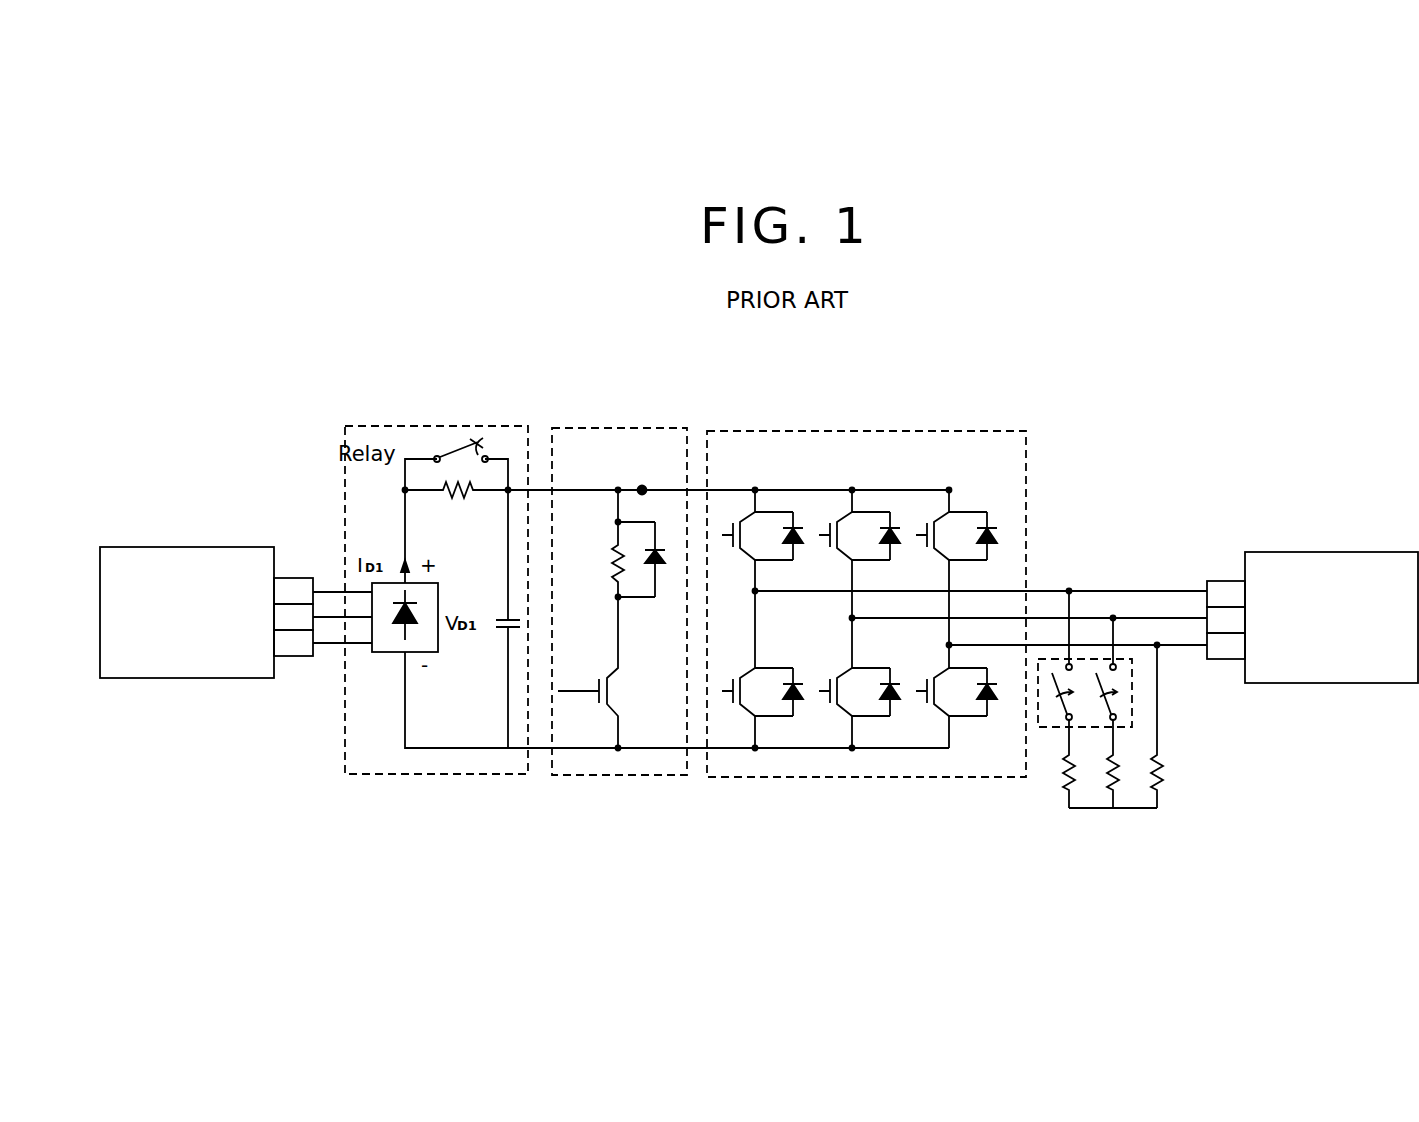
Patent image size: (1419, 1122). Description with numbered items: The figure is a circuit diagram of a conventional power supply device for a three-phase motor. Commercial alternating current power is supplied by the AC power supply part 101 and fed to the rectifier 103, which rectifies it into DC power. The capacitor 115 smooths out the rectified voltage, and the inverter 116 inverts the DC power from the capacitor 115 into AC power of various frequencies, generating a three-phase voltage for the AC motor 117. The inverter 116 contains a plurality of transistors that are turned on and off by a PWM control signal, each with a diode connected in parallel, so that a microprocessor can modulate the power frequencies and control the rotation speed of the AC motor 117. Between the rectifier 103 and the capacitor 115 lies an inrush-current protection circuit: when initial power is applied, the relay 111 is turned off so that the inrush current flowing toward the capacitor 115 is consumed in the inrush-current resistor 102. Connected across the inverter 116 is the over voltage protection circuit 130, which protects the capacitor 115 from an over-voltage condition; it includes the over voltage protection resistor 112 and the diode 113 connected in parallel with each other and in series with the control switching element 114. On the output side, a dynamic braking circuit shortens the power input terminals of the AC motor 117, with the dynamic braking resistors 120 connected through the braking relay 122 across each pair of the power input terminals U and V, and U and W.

The AC power supply part 101 is at (190, 547).
The inrush-current resistor 102 is at (472, 488).
The rectifier 103 is at (378, 644).
The relay 111 is at (462, 448).
The over voltage protection resistor 112 is at (610, 545).
The diode 113 is at (656, 545).
The control switching element 114 is at (590, 703).
The capacitor 115 is at (498, 632).
The inverter 116 is at (888, 430).
The AC motor 117 is at (1322, 552).
The dynamic braking resistors 120 is at (1160, 770).
The braking relay 122 is at (1132, 716).
The over voltage protection circuit 130 is at (628, 608).